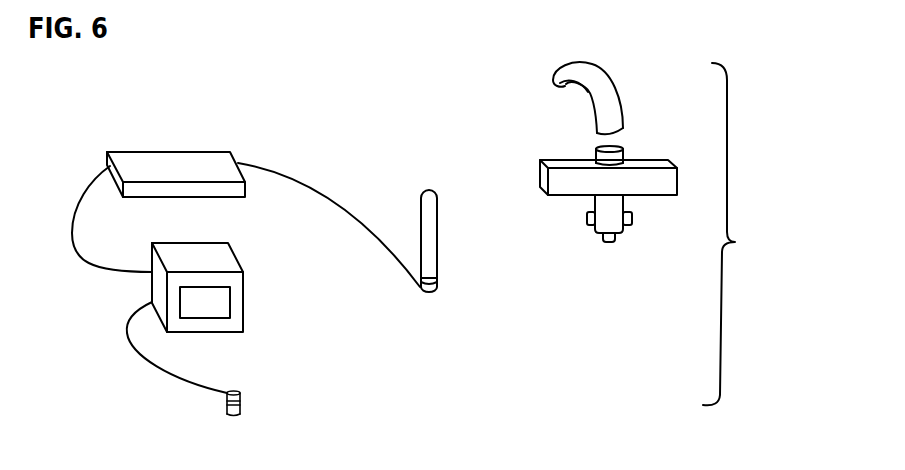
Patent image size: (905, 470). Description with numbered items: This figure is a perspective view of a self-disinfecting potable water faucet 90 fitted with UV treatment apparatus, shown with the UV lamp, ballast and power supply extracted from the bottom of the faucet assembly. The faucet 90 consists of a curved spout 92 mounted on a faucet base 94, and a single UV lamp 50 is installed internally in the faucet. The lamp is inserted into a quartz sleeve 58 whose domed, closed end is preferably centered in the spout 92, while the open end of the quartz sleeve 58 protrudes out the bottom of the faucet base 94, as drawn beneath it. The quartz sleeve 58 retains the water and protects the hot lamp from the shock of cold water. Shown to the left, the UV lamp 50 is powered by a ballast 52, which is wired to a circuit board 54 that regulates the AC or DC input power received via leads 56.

The UV lamp 50 is at (435, 187).
The ballast 52 is at (142, 147).
The circuit board 54 is at (145, 288).
The leads 56 is at (218, 403).
The quartz sleeve 58 is at (607, 245).
The self-disinfecting potable water faucet 90 is at (744, 234).
The spout 92 is at (622, 98).
The faucet base 94 is at (565, 183).